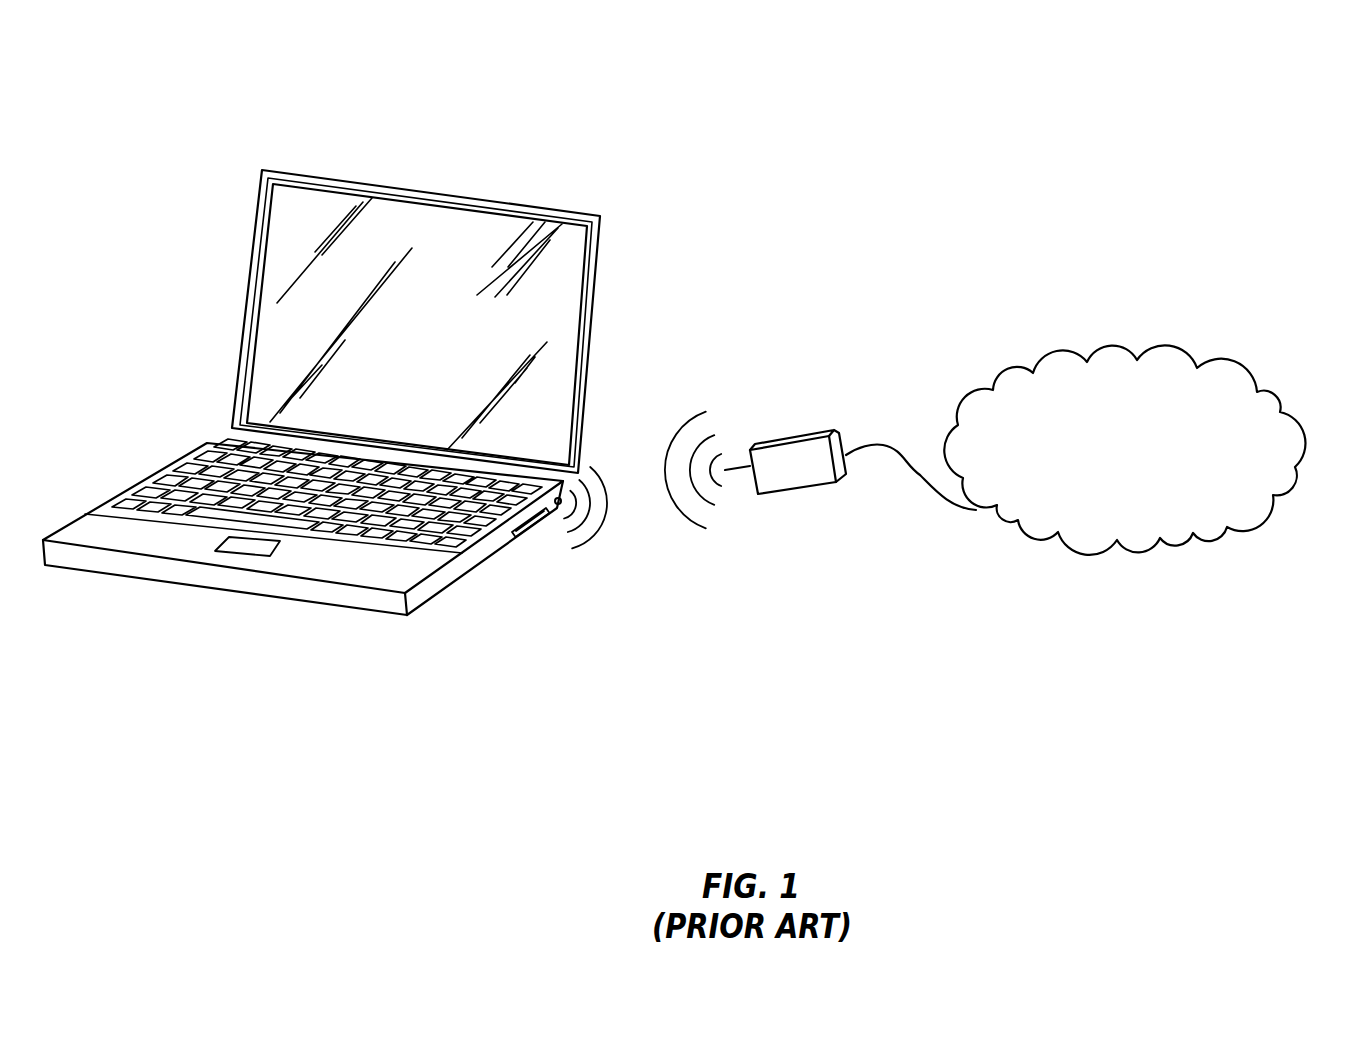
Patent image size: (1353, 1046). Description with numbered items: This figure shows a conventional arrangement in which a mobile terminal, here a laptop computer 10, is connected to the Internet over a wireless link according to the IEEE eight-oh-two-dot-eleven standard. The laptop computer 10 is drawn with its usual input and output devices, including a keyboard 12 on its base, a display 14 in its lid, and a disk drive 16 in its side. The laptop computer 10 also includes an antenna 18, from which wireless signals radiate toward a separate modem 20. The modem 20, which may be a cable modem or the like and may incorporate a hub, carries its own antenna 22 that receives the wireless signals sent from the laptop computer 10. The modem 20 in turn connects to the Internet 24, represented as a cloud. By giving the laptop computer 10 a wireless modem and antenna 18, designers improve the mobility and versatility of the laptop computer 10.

The laptop computer 10 is at (646, 152).
The keyboard 12 is at (450, 547).
The display 14 is at (415, 222).
The disk drive 16 is at (525, 527).
The antenna 18 is at (560, 503).
The modem 20 is at (802, 432).
The antenna 22 is at (733, 466).
The Internet 24 is at (1258, 391).